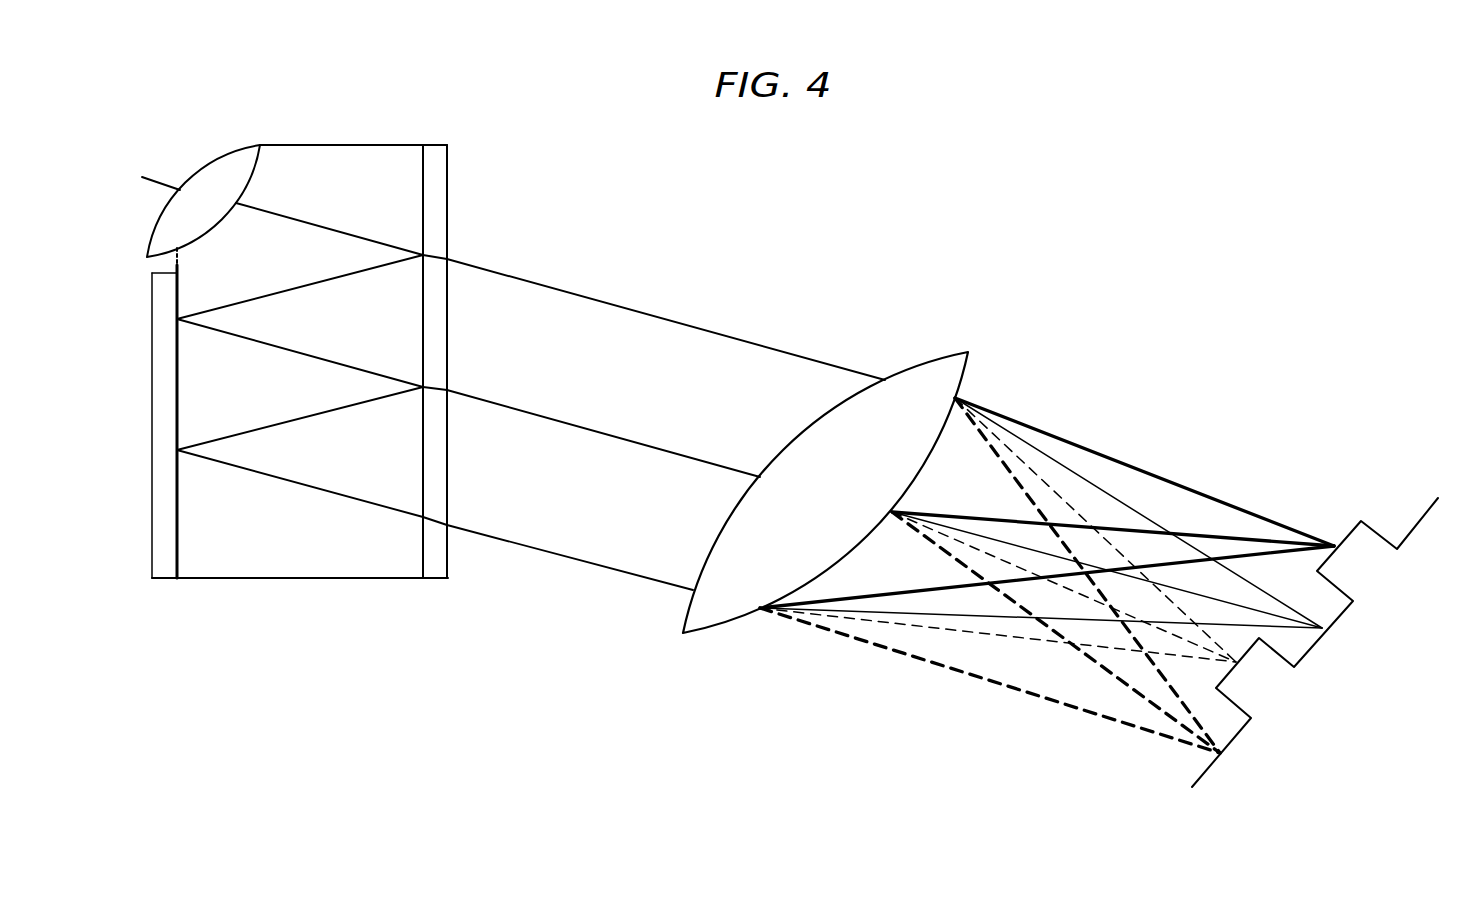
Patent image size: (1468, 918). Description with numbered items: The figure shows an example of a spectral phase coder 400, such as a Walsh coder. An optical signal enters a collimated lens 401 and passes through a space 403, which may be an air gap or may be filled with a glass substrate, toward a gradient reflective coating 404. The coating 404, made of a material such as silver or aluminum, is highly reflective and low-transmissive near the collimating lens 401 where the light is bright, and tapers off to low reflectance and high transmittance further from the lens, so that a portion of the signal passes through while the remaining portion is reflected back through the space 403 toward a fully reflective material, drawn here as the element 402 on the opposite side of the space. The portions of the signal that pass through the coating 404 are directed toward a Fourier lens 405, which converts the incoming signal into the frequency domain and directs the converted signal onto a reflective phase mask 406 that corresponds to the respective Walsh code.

The spectral phase coder 400 is at (1160, 210).
The collimated lens 401 is at (231, 153).
The reflective light modulator 402 is at (163, 398).
The space 403 is at (302, 562).
The gradient reflective coating 404 is at (448, 197).
The Fourier lens 405 is at (940, 360).
The reflective phase mask 406 is at (1428, 511).